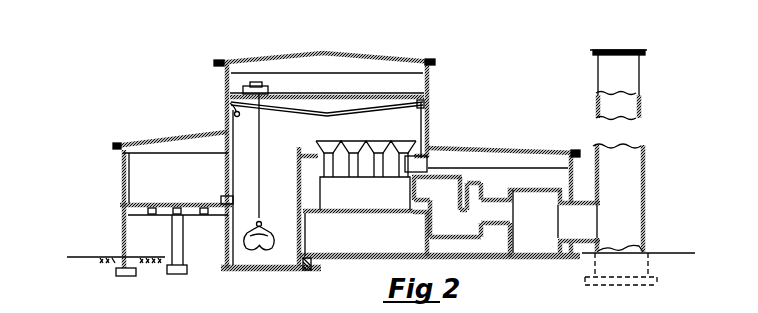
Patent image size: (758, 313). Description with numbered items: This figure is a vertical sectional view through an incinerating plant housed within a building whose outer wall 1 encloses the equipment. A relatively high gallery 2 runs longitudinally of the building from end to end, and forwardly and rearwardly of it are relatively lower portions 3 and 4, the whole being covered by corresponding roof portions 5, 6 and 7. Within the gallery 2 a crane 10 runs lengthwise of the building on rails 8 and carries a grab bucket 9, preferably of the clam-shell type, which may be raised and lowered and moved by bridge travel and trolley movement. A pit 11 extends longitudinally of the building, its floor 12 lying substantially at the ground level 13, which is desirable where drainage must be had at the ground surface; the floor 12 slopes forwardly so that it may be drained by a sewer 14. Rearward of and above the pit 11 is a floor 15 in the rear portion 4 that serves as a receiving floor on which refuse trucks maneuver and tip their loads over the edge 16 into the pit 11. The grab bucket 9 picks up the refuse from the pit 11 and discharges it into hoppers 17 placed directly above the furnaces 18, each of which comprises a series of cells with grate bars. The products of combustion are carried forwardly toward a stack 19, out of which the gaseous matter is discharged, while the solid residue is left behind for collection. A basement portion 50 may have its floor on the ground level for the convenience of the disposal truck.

The outer wall 1 is at (120, 230).
The gallery 2 is at (415, 87).
The lower portion 3 is at (515, 160).
The lower portion 4 is at (137, 163).
The roof portion 5 is at (363, 53).
The roof portion 6 is at (470, 148).
The roof portion 7 is at (165, 136).
The rails 8 is at (233, 107).
The grab bucket 9 is at (279, 238).
The crane 10 is at (297, 113).
The pit 11 is at (257, 272).
The floor of the pit 12 is at (284, 272).
The ground level 13 is at (75, 258).
The sewer 14 is at (308, 272).
The floor 15 is at (163, 203).
The edge 16 is at (249, 186).
The hoppers 17 is at (358, 141).
The furnaces 18 is at (358, 194).
The stack 19 is at (637, 175).
The basement portion 50 is at (440, 234).